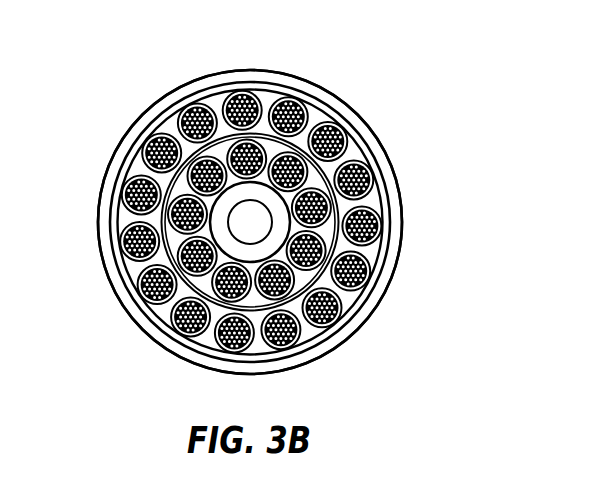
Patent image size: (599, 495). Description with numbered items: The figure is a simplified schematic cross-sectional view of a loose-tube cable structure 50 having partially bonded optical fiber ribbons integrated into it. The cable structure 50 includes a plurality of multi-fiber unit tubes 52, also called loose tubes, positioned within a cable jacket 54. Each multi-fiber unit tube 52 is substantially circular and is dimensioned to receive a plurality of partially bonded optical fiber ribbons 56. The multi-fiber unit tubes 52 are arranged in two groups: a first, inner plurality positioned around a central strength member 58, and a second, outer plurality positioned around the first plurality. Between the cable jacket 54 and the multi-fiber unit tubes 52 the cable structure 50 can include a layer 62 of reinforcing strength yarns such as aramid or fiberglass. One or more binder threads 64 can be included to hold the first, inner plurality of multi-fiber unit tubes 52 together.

The loose-tube cable structure 50 is at (76, 128).
The multi-fiber unit tube 52 is at (392, 257).
The cable jacket 54 is at (295, 78).
The partially bonded optical fiber ribbon 56 is at (365, 287).
The central strength member 58 is at (258, 218).
The layer of reinforcing strength yarns 62 is at (387, 190).
The binder thread 64 is at (216, 117).